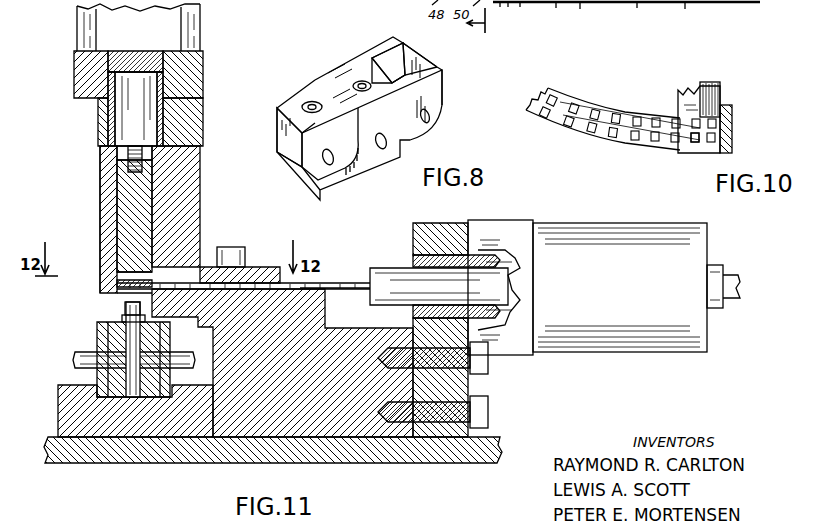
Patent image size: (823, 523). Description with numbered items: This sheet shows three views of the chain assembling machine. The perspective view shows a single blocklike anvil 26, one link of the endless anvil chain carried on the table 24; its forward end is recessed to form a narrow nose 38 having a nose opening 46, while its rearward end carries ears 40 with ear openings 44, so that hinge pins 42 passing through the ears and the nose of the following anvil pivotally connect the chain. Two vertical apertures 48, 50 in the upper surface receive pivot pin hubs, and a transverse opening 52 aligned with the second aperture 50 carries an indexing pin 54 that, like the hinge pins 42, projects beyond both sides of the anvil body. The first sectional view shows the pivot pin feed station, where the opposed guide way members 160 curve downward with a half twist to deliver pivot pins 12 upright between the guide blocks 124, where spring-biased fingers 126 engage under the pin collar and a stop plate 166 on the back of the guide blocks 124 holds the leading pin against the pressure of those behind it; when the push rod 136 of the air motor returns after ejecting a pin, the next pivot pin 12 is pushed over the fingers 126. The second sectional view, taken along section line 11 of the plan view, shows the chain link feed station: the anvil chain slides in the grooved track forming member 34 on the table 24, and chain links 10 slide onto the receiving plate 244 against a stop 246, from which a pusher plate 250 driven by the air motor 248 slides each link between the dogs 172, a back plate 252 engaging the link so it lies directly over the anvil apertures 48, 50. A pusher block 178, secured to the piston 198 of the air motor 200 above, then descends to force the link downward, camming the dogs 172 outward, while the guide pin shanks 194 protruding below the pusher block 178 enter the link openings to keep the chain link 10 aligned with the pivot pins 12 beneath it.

In FIG. 11, the chain link 10 is at (275, 283).
In FIG. 8, the section line 11 is at (488, 26).
In FIG. 10, the pivot pin 12 is at (640, 137).
In FIG. 11, the pivot pin 12 is at (123, 312).
In FIG. 11, the table 24 is at (88, 453).
In FIG. 8, the anvil 26 is at (337, 68).
In FIG. 11, the anvil 26 is at (97, 333).
In FIG. 11, the track forming member 34 is at (58, 388).
In FIG. 8, the nose 38 is at (290, 105).
In FIG. 8, the ears 40 is at (432, 93).
In FIG. 8, the hinge pin 42 is at (686, 14).
In FIG. 11, the hinge pin 42 is at (192, 360).
In FIG. 8, the ear openings 44 is at (432, 113).
In FIG. 8, the nose opening 46 is at (322, 163).
In FIG. 8, the aperture 48 is at (311, 102).
In FIG. 11, the aperture 48 is at (135, 344).
In FIG. 8, the aperture 50 is at (362, 82).
In FIG. 8, the transverse opening 52 is at (383, 150).
In FIG. 8, the indexing pin 54 is at (639, 10).
In FIG. 10, the guide block 124 is at (683, 93).
In FIG. 10, the finger 126 is at (705, 152).
In FIG. 10, the push rod 136 is at (712, 95).
In FIG. 10, the guide way member 160 is at (640, 117).
In FIG. 10, the stop plate 166 is at (732, 125).
In FIG. 11, the dog 172 is at (150, 297).
In FIG. 11, the pusher block 178 is at (125, 183).
In FIG. 11, the guide pin shank 194 is at (120, 279).
In FIG. 11, the piston 198 is at (127, 117).
In FIG. 11, the air motor 200 is at (90, 30).
In FIG. 11, the receiving plate 244 is at (320, 282).
In FIG. 11, the stop 246 is at (325, 286).
In FIG. 11, the air motor 248 is at (653, 335).
In FIG. 11, the pusher plate 250 is at (353, 290).
In FIG. 11, the back plate 252 is at (107, 237).